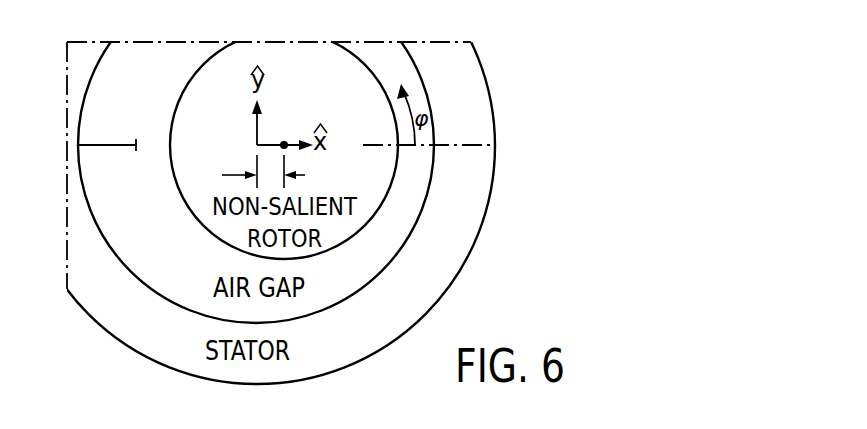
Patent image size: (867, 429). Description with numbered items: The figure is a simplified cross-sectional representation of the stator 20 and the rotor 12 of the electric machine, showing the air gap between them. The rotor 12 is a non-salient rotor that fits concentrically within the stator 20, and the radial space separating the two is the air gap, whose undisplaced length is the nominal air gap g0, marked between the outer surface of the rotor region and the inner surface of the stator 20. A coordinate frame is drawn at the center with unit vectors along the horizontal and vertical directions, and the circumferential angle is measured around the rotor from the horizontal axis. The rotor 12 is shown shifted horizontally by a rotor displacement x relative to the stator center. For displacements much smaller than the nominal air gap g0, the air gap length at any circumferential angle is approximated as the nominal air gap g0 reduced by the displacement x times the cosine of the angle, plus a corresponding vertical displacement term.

The stator 20 is at (455, 213).
The rotor 12 is at (350, 228).
The rotor displacement x is at (305, 175).
The nominal air gap g0 is at (107, 129).